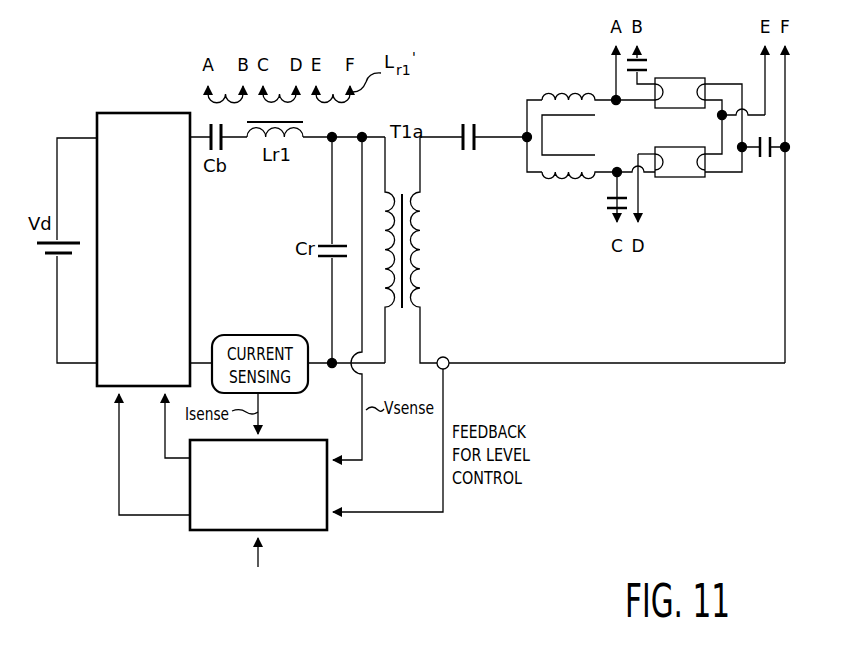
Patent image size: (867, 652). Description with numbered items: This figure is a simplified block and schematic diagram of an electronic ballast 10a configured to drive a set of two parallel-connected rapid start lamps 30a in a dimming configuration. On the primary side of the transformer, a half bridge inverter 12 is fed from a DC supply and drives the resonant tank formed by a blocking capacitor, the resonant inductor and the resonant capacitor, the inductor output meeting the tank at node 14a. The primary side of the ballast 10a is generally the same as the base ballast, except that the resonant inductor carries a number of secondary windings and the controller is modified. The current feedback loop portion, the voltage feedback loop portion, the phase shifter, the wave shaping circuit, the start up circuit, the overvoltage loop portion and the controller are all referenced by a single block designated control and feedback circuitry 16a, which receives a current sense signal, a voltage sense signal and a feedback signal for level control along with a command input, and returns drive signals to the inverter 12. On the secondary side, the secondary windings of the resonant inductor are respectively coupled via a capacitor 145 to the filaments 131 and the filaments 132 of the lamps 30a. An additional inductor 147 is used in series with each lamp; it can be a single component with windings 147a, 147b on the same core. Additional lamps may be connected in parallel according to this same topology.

The half bridge inverter 12 is at (115, 123).
The resonant tank node 14a is at (350, 124).
The ballast 10a is at (420, 112).
The control and feedback circuitry 16a is at (324, 531).
The additional inductor 147 is at (550, 132).
The winding 147a is at (569, 96).
The winding 147b is at (543, 181).
The capacitor 145 is at (647, 65).
The rapid start lamp 30a is at (685, 143).
The filament 131 is at (648, 102).
The filament 132 is at (704, 91).